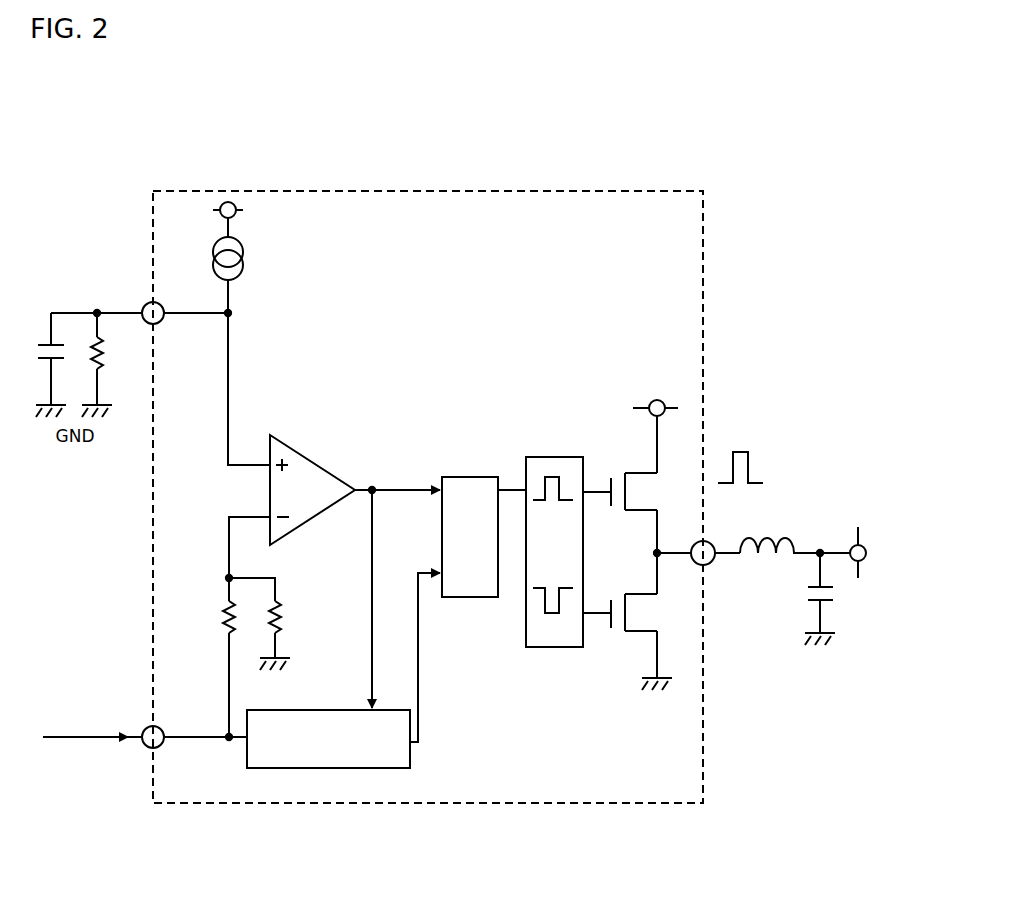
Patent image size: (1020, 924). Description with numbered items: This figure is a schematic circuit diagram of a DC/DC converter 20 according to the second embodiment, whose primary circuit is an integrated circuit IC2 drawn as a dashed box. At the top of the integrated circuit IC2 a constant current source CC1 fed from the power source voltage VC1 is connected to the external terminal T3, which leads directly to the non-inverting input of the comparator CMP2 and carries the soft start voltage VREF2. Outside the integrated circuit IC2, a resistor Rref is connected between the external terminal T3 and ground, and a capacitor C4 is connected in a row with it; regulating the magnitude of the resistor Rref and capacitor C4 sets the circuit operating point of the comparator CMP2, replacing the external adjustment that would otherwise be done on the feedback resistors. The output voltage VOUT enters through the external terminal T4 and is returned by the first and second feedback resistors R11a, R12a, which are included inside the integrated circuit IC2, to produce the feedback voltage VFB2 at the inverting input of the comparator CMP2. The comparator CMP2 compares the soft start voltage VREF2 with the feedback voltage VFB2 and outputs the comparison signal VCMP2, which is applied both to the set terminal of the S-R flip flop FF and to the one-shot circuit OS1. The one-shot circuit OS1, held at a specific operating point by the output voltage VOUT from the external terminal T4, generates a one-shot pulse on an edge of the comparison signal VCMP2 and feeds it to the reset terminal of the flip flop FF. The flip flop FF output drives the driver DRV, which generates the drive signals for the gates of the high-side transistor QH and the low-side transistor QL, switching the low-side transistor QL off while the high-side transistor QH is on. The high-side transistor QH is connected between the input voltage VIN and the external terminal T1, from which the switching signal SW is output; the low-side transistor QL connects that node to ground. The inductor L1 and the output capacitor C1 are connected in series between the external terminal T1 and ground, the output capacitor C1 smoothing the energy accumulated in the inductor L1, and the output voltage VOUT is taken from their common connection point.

The DC/DC converter 20 is at (389, 184).
The integrated circuit IC2 is at (705, 380).
The power source voltage VC1 is at (248, 219).
The constant current source CC1 is at (249, 275).
The external terminal T3 is at (141, 304).
The capacitor C4 is at (58, 365).
The resistor Rref is at (112, 365).
The soft start voltage VREF2 is at (258, 389).
The comparator CMP2 is at (355, 489).
The comparison signal VCMP2 is at (392, 488).
The feedback voltage VFB2 is at (217, 549).
The first feedback resistor R11a is at (200, 657).
The second feedback resistor R12a is at (282, 624).
The external terminal T4 is at (145, 739).
The one-shot circuit OS1 is at (343, 629).
The S-R flip flop FF is at (484, 521).
The driver DRV is at (568, 536).
The input voltage VIN is at (655, 423).
The high-side transistor QH is at (642, 501).
The low-side transistor QL is at (642, 633).
The external terminal T1 is at (697, 565).
The switching signal SW is at (727, 553).
The inductor L1 is at (795, 533).
The output voltage VOUT is at (838, 541).
The output capacitor C1 is at (807, 610).